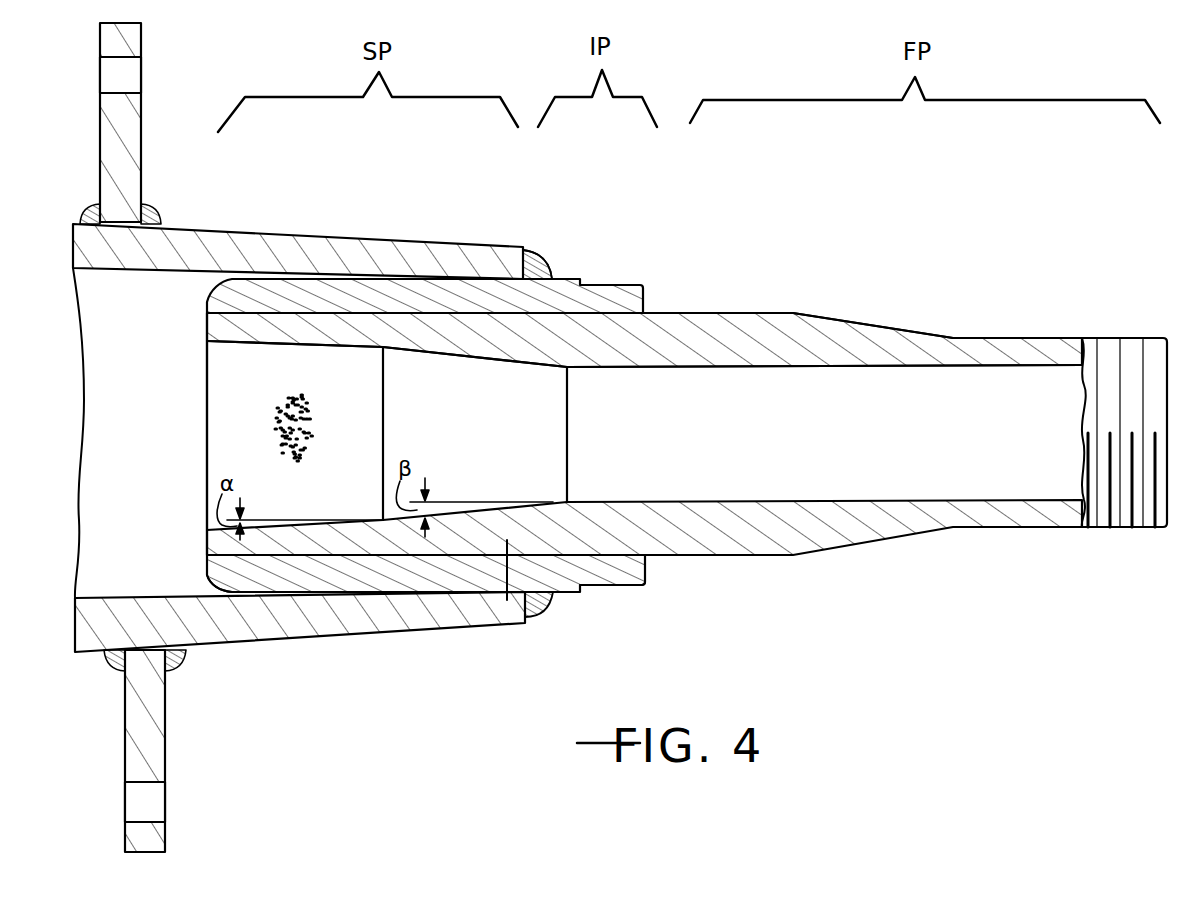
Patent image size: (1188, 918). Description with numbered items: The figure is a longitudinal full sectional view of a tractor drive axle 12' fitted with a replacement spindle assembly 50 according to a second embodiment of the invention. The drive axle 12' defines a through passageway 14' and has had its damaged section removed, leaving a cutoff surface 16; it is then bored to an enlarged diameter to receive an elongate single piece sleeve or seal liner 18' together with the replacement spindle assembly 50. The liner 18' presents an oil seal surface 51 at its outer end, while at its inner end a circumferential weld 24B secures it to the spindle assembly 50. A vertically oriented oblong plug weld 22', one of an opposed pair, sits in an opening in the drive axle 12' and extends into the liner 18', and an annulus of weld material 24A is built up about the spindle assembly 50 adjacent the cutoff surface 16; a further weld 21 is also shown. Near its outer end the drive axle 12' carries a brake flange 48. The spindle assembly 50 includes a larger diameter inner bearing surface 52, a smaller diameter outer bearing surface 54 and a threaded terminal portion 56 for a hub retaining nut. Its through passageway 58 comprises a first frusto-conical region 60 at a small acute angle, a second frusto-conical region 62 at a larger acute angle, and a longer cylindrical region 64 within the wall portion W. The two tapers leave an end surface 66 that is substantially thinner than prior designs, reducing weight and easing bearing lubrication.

The through passageway 14' is at (134, 153).
The drive axle 12' is at (299, 407).
The single piece sleeve or seal liner 18' is at (426, 368).
The cutoff surface 16 is at (527, 250).
The annulus of weld material 24A is at (545, 266).
The circumferential weld 24B is at (207, 573).
The replacement spindle assembly 50 is at (798, 304).
The inner bearing surface 52 is at (728, 313).
The outer bearing surface 54 is at (1023, 338).
The threaded terminal portion 56 is at (1128, 527).
The through passageway 58 is at (645, 429).
The first frusto-conical region 60 is at (293, 343).
The second frusto-conical region 62 is at (447, 357).
The cylindrical region 64 is at (895, 367).
The end surface 66 is at (205, 332).
The oblong plug weld 22' is at (308, 451).
The weld 21 is at (310, 592).
The wall portion W is at (507, 598).
The oil seal surface 51 is at (615, 587).
The brake flange 48 is at (150, 737).